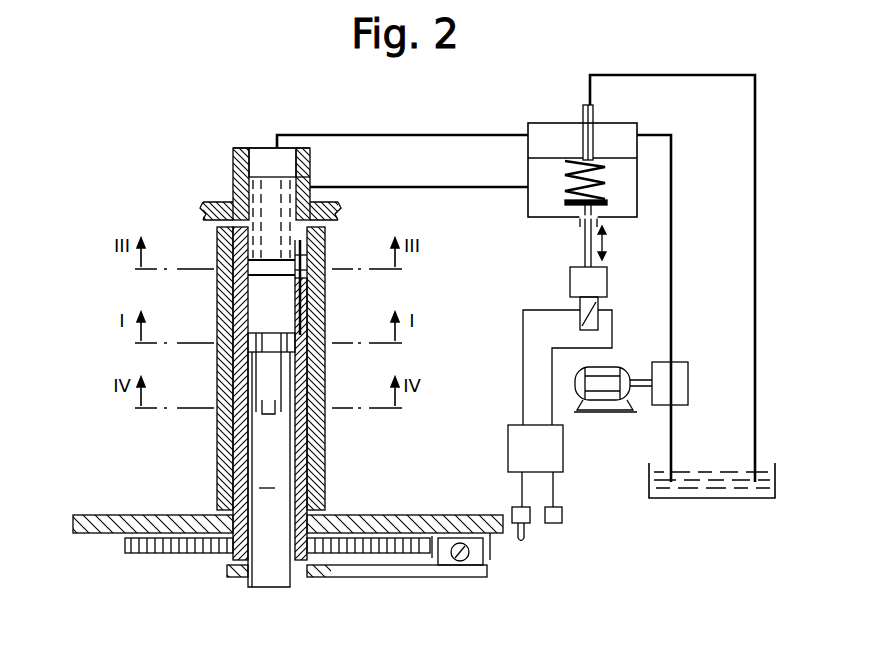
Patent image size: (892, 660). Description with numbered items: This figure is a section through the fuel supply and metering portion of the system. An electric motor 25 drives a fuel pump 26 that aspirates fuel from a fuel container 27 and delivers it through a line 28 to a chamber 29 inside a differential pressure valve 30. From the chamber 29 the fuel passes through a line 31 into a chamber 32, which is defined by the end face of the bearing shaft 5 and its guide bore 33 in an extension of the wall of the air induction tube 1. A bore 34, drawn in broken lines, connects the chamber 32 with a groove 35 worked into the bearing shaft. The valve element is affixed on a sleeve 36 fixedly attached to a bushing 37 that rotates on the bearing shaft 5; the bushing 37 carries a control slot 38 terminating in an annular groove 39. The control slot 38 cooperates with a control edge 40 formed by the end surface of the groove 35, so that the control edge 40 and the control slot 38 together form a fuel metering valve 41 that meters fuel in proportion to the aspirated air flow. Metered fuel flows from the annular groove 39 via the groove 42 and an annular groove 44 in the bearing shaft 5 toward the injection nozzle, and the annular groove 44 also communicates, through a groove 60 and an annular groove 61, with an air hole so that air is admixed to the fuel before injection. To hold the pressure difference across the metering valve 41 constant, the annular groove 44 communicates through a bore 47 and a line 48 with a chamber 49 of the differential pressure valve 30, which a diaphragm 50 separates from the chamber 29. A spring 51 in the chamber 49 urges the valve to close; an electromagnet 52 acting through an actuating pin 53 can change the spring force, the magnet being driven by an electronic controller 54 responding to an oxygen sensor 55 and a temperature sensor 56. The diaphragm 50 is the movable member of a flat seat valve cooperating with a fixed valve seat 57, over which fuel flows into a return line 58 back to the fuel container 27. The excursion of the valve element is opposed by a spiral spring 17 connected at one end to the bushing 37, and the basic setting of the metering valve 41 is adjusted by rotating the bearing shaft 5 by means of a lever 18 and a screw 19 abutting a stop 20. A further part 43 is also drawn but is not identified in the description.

The air induction tube 1 is at (97, 528).
The bearing shaft 5 is at (269, 469).
The spiral spring 17 is at (152, 555).
The lever 18 is at (357, 578).
The screw 19 is at (462, 562).
The stop 20 is at (490, 562).
The electric motor 25 is at (607, 382).
The fuel pump 26 is at (677, 380).
The fuel container 27 is at (716, 492).
The line 28 is at (672, 268).
The chamber 29 is at (616, 132).
The differential pressure valve 30 is at (526, 118).
The line 31 is at (390, 132).
The chamber 32 is at (262, 158).
The guide bore 33 is at (298, 160).
The bore 34 is at (257, 200).
The groove 35 is at (256, 270).
The sleeve 36 is at (222, 455).
The bushing 37 is at (243, 385).
The control slot 38 is at (300, 272).
The annular groove 39 is at (310, 262).
The control edge 40 is at (265, 280).
The fuel metering valve 41 is at (328, 294).
The groove 42 is at (318, 338).
The rod guide 43 is at (312, 350).
The annular groove 44 is at (307, 380).
The bore 47 is at (328, 233).
The line 48 is at (405, 185).
The chamber 49 is at (545, 200).
The diaphragm 50 is at (540, 163).
The spring 51 is at (595, 176).
The electromagnet 52 is at (577, 278).
The actuating pin 53 is at (585, 250).
The electronic controller 54 is at (552, 446).
The oxygen sensor 55 is at (521, 540).
The temperature sensor 56 is at (565, 518).
The fixed valve seat 57 is at (583, 112).
The return line 58 is at (690, 74).
The groove 60 is at (312, 445).
The annular groove 61 is at (282, 405).